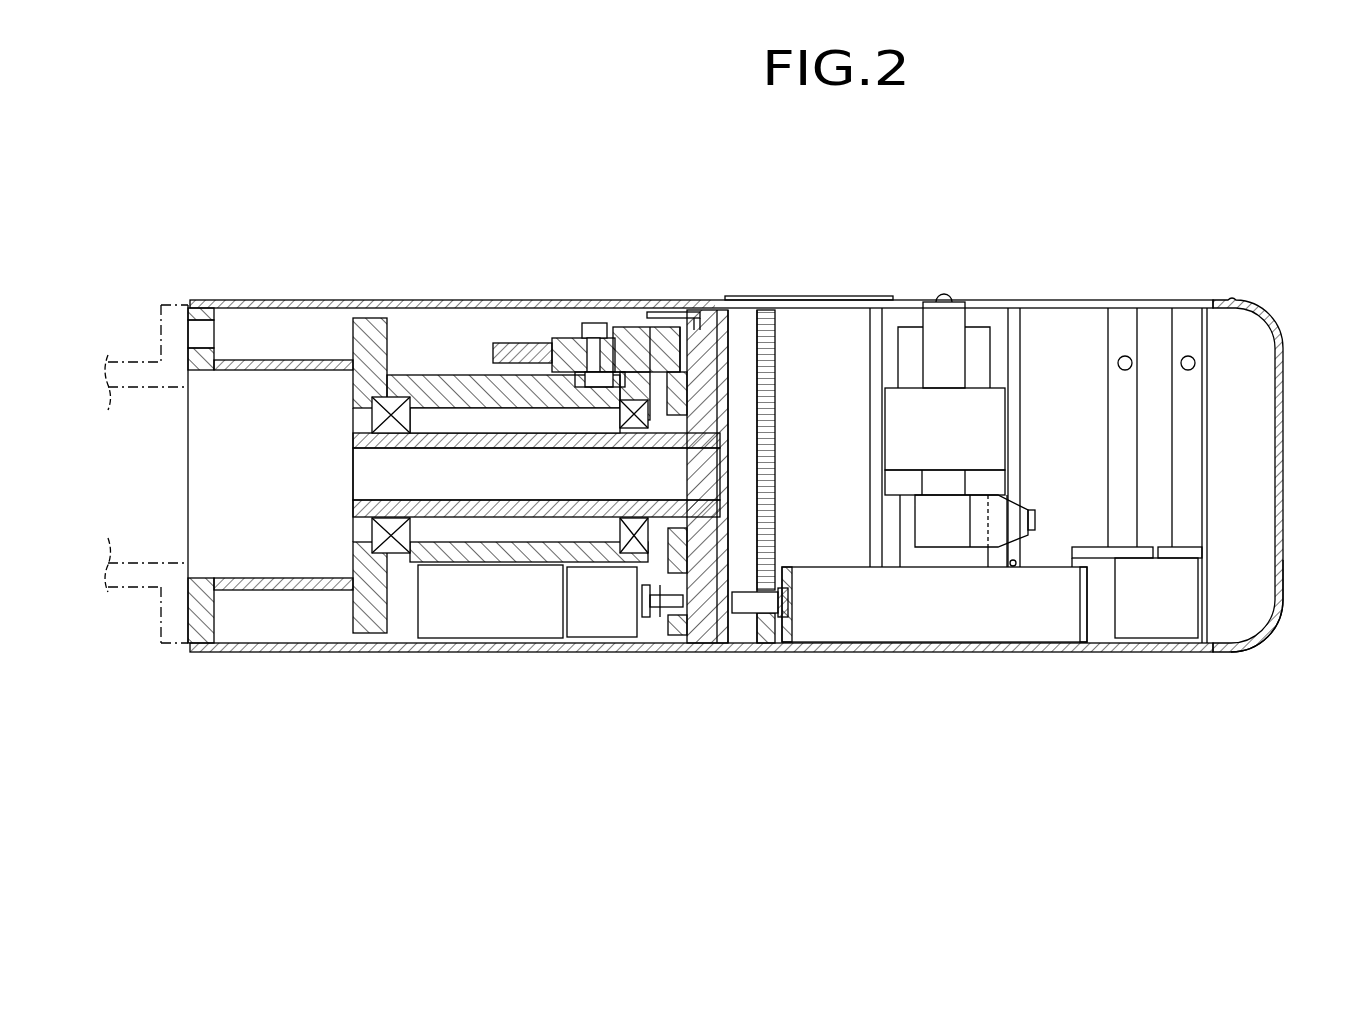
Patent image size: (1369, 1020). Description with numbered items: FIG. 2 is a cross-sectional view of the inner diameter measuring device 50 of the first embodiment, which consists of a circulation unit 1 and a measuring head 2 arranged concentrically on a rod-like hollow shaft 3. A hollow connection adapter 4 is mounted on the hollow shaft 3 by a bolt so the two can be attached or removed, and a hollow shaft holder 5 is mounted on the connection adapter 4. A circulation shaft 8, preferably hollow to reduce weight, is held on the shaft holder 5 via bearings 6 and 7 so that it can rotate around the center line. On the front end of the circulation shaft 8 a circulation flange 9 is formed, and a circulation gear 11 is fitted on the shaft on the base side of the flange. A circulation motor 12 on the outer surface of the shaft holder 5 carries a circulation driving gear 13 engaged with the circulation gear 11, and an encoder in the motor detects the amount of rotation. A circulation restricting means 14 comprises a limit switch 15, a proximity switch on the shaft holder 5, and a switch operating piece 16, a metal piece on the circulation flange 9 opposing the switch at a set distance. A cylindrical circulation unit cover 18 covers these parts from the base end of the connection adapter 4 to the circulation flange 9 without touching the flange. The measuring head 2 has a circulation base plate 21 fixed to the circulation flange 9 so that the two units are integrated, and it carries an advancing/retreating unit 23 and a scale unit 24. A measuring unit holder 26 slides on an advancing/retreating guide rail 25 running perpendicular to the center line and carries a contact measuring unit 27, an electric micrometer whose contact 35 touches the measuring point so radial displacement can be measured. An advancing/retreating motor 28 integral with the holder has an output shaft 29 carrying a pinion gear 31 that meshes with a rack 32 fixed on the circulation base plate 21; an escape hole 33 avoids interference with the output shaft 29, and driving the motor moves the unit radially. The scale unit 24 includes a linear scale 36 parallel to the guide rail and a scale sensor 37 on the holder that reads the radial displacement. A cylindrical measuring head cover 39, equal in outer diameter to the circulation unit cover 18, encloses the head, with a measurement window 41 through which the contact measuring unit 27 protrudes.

The circulation unit 1 is at (468, 298).
The measuring head 2 is at (1137, 304).
The hollow shaft 3 is at (160, 362).
The connection adapter 4 is at (270, 358).
The shaft holder 5 is at (447, 375).
The bearing 6 is at (372, 423).
The bearing 7 is at (655, 330).
The circulation shaft 8 is at (492, 517).
The circulation flange 9 is at (698, 635).
The circulation gear 11 is at (592, 640).
The circulation motor 12 is at (468, 640).
The circulation driving gear 13 is at (666, 606).
The circulation restricting means 14 is at (620, 322).
The limit switch 15 is at (552, 338).
The switch operating piece 16 is at (680, 305).
The circulation unit cover 18 is at (390, 300).
The circulation base plate 21 is at (728, 655).
The advancing/retreating unit 23 is at (860, 398).
The scale unit 24 is at (1214, 440).
The advancing/retreating guide rail 25 is at (1020, 350).
The measuring unit holder 26 is at (972, 427).
The contact measuring unit 27 is at (968, 345).
The advancing/retreating motor 28 is at (855, 567).
The output shaft 29 is at (742, 590).
The pinion gear 31 is at (768, 652).
The rack 32 is at (778, 378).
The escape hole 33 is at (740, 472).
The contact 35 is at (945, 296).
The linear scale 36 is at (1152, 355).
The scale sensor 37 is at (1205, 573).
The measuring head cover 39 is at (1284, 538).
The measurement window 41 is at (905, 306).
The inner diameter measuring device 50 is at (661, 169).